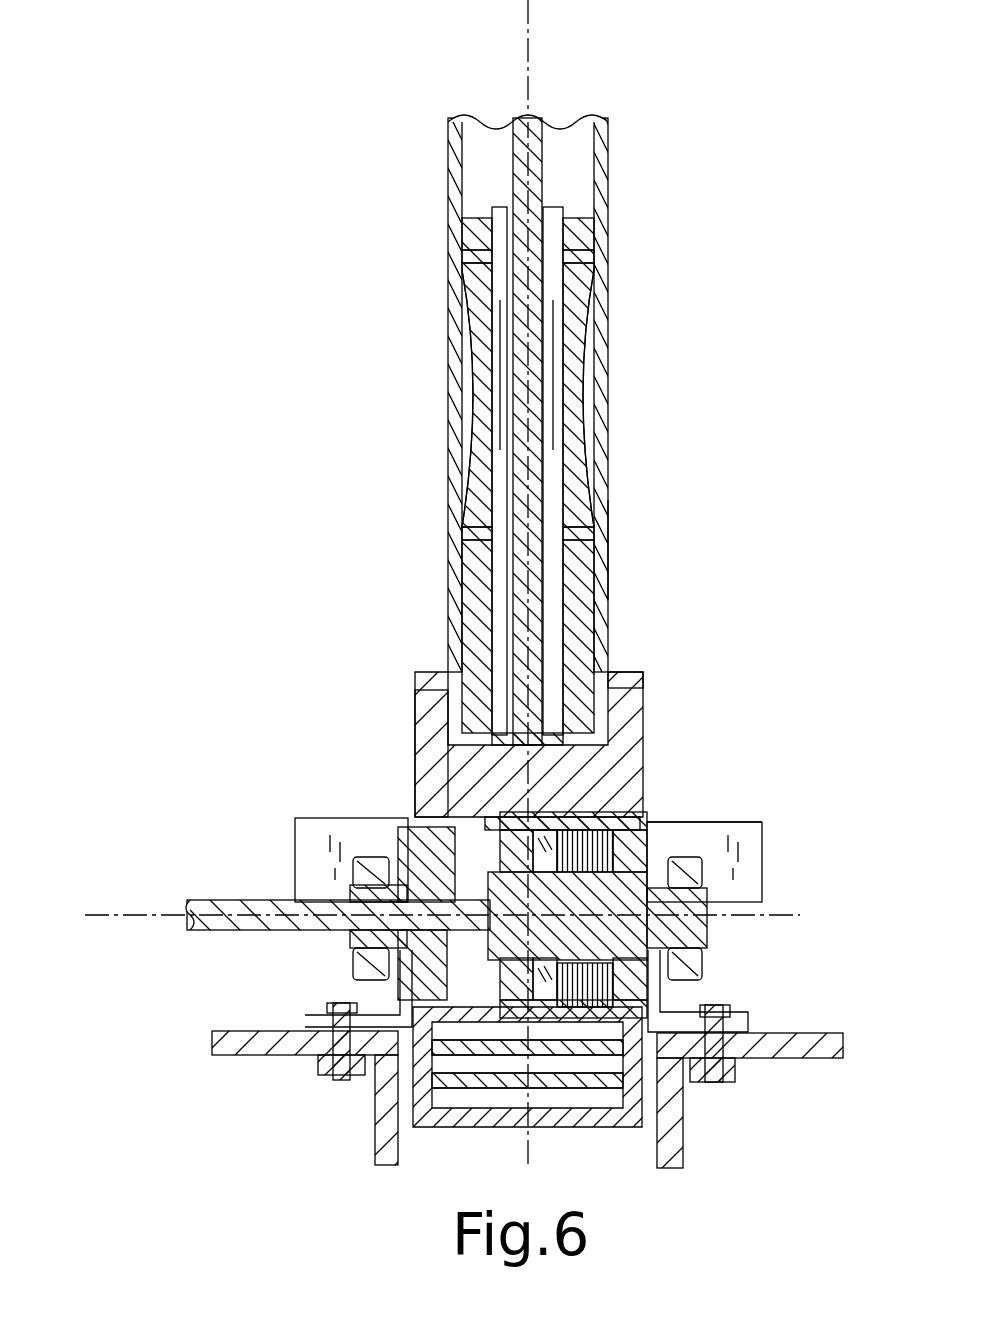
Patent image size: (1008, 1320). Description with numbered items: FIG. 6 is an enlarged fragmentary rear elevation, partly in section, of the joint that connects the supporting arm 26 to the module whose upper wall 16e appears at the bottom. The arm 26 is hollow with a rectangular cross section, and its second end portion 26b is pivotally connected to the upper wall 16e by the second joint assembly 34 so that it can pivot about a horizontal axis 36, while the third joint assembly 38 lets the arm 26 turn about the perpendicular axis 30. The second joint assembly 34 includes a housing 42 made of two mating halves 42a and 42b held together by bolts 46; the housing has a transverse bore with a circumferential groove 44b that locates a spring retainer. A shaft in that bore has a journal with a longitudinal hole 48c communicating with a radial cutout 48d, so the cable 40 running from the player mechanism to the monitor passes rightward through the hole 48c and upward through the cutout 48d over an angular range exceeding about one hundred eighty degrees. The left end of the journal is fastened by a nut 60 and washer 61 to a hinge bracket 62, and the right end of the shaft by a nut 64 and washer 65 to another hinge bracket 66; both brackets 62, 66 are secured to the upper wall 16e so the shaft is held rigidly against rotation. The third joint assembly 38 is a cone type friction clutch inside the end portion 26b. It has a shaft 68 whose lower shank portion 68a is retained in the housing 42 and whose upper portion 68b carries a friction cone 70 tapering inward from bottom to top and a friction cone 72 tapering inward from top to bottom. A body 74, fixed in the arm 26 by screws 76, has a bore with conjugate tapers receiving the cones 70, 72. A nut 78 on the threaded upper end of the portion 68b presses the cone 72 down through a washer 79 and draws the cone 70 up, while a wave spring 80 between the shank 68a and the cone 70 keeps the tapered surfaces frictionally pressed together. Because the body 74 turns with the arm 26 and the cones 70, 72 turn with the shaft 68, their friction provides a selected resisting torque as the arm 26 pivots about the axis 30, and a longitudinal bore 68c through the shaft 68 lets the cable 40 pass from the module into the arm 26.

The axis 30 is at (530, 30).
The axis 36 is at (120, 913).
The arm 26 is at (608, 147).
The second end portion 26b is at (646, 547).
The cable 40 is at (510, 128).
The washer 79 is at (565, 262).
The nut 78 is at (468, 242).
The body 74 is at (470, 432).
The friction cone 70 is at (603, 463).
The screws 76 is at (500, 385).
The friction cone 72 is at (583, 378).
The upper portion 68b is at (598, 320).
The third joint assembly 38 is at (664, 414).
The wave spring 80 is at (465, 532).
The longitudinal bore 68c is at (500, 585).
The lower shank portion 68a is at (580, 578).
The shaft 68 is at (636, 505).
The housing 42 is at (383, 654).
The mating half 42a is at (642, 688).
The mating half 42b is at (418, 726).
The circumferential groove 44b is at (540, 800).
The bolts 46 is at (640, 756).
The second joint assembly 34 is at (797, 818).
The longitudinal hole 48c is at (430, 822).
The radial cutout 48d is at (420, 985).
The washer 61 is at (345, 852).
The washer 65 is at (670, 858).
The nut 60 is at (340, 872).
The nut 64 is at (702, 868).
The hinge bracket 62 is at (318, 1012).
The hinge bracket 66 is at (740, 1012).
The upper wall 16e is at (255, 1048).